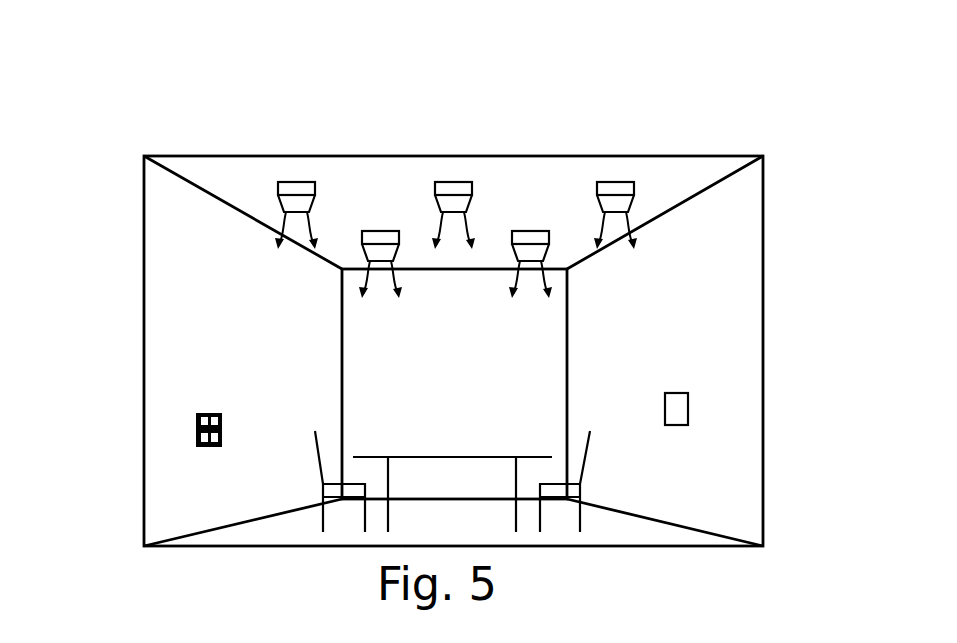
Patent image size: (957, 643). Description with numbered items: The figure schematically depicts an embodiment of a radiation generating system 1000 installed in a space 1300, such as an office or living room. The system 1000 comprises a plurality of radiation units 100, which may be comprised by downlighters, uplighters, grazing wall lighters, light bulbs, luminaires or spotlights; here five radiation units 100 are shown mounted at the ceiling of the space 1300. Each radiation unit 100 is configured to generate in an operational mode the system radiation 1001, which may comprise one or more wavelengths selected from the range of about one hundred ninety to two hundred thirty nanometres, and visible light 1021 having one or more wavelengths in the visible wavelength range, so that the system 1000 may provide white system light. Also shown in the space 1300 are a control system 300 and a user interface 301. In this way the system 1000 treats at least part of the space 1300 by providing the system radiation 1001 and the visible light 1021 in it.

The radiation generating system 1000 is at (742, 127).
The space 1300 is at (167, 464).
The radiation unit 100 is at (384, 231).
The system radiation 1001 is at (682, 255).
The visible light 1021 is at (437, 250).
The control system 300 is at (675, 410).
The user interface 301 is at (213, 413).